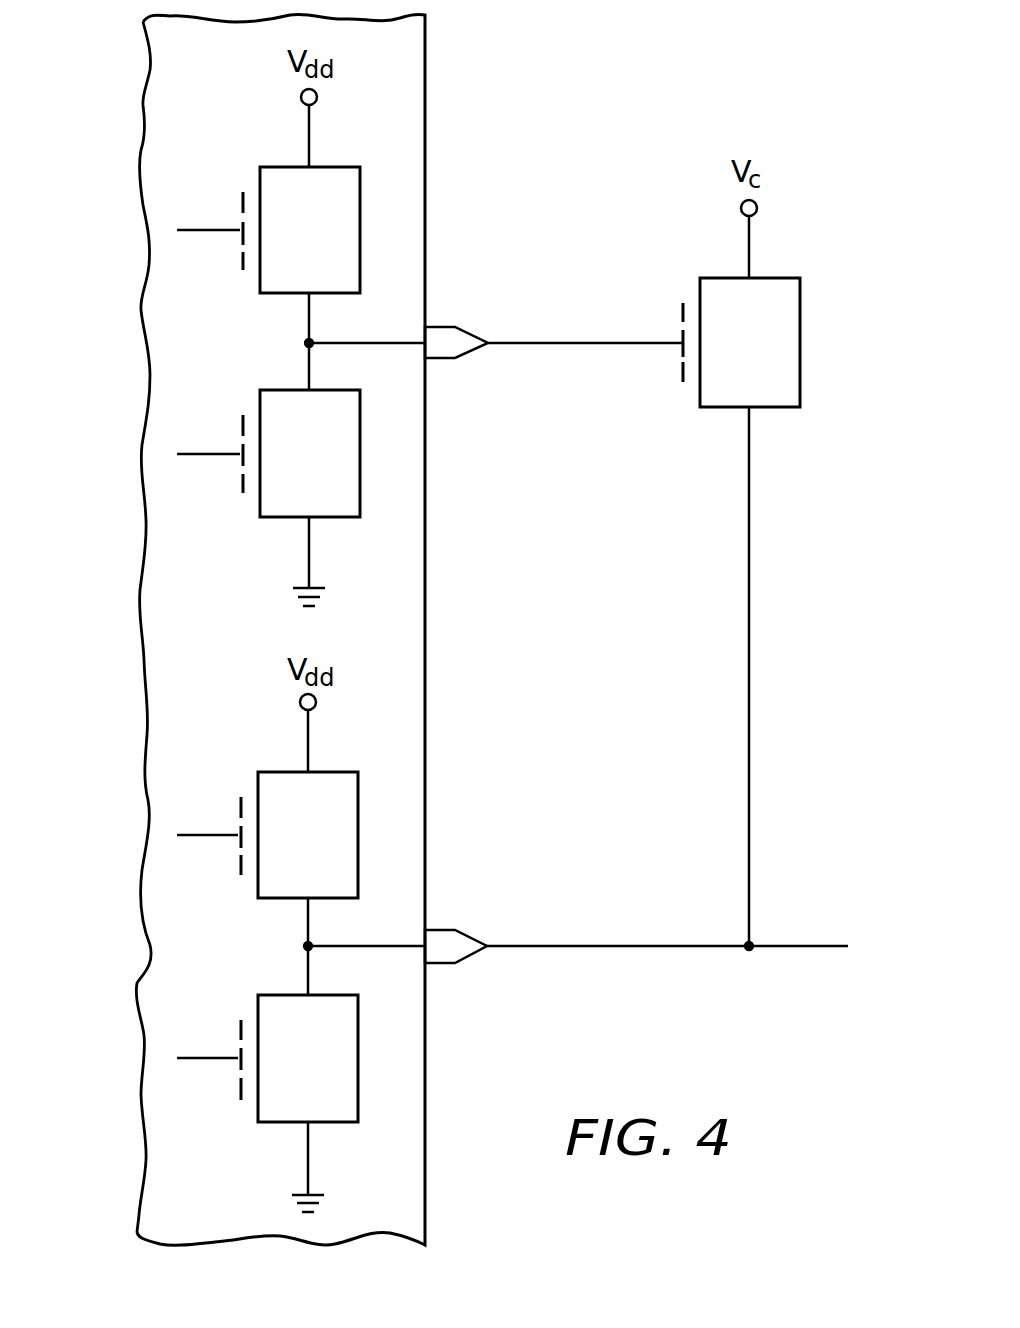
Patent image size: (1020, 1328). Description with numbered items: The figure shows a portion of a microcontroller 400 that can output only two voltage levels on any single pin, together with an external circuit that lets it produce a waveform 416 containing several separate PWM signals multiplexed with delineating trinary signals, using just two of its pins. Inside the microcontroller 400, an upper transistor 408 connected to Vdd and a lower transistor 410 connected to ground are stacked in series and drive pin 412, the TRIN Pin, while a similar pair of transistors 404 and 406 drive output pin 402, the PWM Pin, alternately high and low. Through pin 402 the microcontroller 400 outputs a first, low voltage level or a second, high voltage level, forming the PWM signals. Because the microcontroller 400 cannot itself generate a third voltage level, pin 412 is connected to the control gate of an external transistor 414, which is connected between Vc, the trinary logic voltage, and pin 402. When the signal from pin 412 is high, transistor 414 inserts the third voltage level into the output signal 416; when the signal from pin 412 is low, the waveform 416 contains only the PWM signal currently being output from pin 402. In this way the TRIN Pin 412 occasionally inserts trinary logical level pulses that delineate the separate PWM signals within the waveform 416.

The microcontroller 400 is at (137, 983).
The output pin 402 is at (430, 930).
The transistor 404 is at (338, 854).
The transistor 406 is at (338, 1077).
The transistor 408 is at (340, 250).
The transistor 410 is at (340, 473).
The pin 412 is at (430, 327).
The transistor 414 is at (781, 362).
The waveform 416 is at (813, 946).